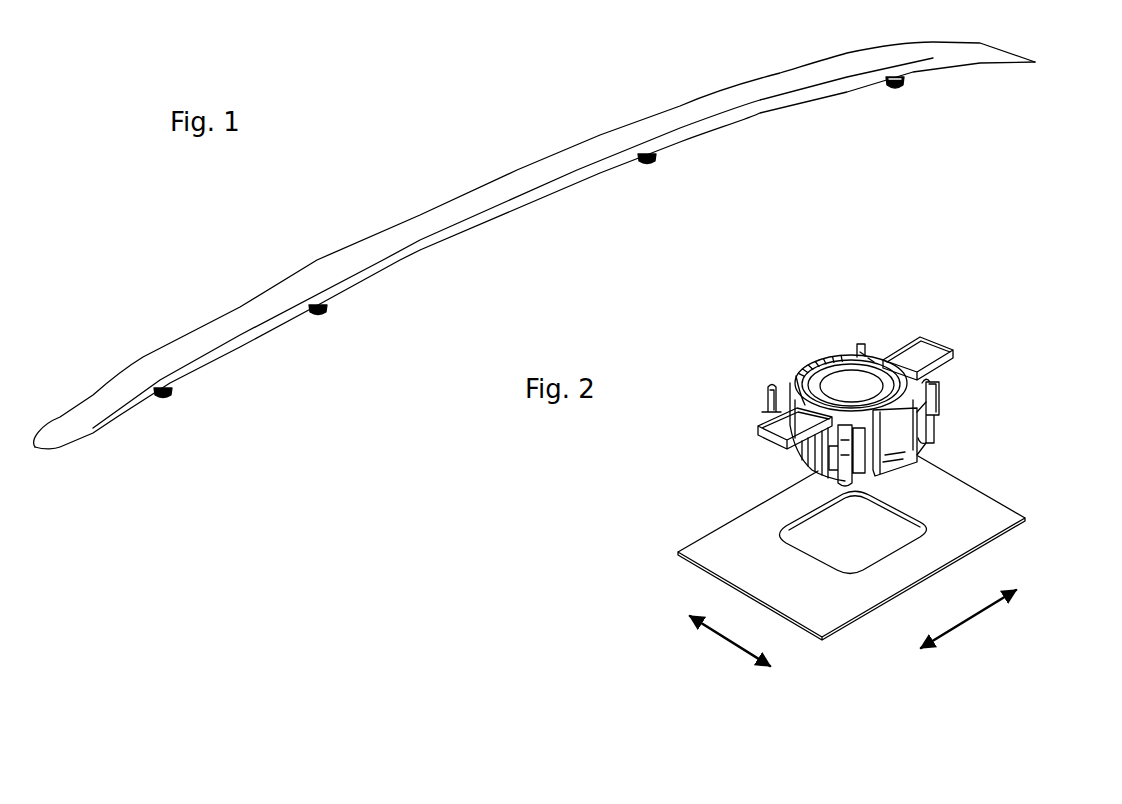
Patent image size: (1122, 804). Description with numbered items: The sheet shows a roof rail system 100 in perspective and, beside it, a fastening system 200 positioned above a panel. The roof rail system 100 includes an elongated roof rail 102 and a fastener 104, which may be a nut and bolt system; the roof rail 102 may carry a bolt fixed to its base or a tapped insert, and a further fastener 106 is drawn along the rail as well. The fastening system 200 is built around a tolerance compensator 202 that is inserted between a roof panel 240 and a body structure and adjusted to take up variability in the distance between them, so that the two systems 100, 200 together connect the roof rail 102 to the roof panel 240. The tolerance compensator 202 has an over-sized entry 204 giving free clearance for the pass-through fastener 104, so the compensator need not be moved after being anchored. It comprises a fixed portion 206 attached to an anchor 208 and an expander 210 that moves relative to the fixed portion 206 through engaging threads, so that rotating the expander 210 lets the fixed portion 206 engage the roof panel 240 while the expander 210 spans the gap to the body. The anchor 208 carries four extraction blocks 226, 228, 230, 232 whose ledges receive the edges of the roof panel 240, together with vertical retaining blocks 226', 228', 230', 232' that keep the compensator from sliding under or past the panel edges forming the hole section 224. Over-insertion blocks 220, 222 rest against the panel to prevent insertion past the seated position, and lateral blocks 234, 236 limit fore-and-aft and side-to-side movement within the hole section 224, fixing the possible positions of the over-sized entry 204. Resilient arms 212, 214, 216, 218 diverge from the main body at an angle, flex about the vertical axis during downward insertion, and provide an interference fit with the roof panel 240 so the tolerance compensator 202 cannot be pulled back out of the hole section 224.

In FIG. 1, the roof rail system 100 is at (534, 273).
In FIG. 1, the roof rail 102 is at (228, 353).
In FIG. 1, the fastener 104 is at (645, 165).
In FIG. 1, the mounting foot 106 is at (810, 92).
In FIG. 2, the fastening system 200 is at (816, 441).
In FIG. 2, the tolerance compensator 202 is at (938, 302).
In FIG. 2, the over-sized entry 204 is at (842, 373).
In FIG. 2, the fixed portion 206 is at (953, 425).
In FIG. 2, the anchor 208 is at (921, 419).
In FIG. 2, the expander 210 is at (789, 366).
In FIG. 2, the resilient arm 212 is at (768, 408).
In FIG. 2, the resilient arm 214 is at (763, 417).
In FIG. 2, the resilient arm 216 is at (862, 350).
In FIG. 2, the resilient arm 218 is at (940, 397).
In FIG. 2, the over-insertion block 220 is at (945, 341).
In FIG. 2, the over-insertion block 222 is at (762, 428).
In FIG. 2, the hole section 224 is at (790, 556).
In FIG. 2, the extraction block 226 is at (725, 396).
In FIG. 2, the retaining block 226' is at (739, 379).
In FIG. 2, the extraction block 228 is at (970, 505).
In FIG. 2, the retaining block 228' is at (991, 484).
In FIG. 2, the extraction block 230 is at (1006, 389).
In FIG. 2, the retaining block 230' is at (1018, 354).
In FIG. 2, the extraction block 232 is at (927, 297).
In FIG. 2, the retaining block 232' is at (918, 269).
In FIG. 2, the lateral block 234 is at (895, 447).
In FIG. 2, the lateral block 236 is at (825, 356).
In FIG. 2, the roof panel 240 is at (870, 618).